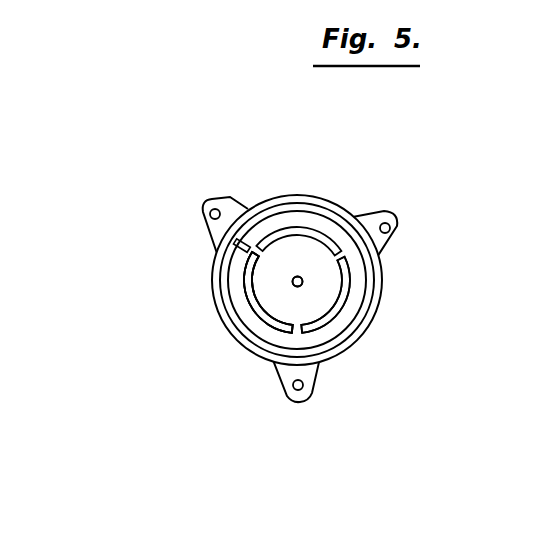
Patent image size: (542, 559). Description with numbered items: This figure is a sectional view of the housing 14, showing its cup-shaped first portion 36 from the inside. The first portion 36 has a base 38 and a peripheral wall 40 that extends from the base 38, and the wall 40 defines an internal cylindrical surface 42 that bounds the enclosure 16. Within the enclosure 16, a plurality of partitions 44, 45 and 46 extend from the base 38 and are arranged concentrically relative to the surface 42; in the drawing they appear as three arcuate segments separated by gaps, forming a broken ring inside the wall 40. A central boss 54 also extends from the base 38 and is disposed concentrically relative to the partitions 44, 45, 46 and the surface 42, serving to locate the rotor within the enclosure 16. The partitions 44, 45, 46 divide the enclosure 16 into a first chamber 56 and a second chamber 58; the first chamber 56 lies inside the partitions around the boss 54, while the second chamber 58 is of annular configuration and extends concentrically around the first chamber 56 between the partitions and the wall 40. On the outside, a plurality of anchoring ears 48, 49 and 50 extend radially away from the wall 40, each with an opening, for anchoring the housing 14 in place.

The housing 14 is at (269, 183).
The enclosure 16 is at (287, 280).
The first portion 36 is at (238, 333).
The base 38 is at (273, 333).
The peripheral wall 40 is at (302, 350).
The internal cylindrical surface 42 is at (217, 255).
The partition 44 is at (322, 323).
The partition 45 is at (298, 236).
The partition 46 is at (248, 296).
The anchoring ear 48 is at (380, 237).
The anchoring ear 49 is at (203, 220).
The anchoring ear 50 is at (284, 366).
The central boss 54 is at (302, 282).
The first chamber 56 is at (320, 297).
The second chamber 58 is at (265, 328).